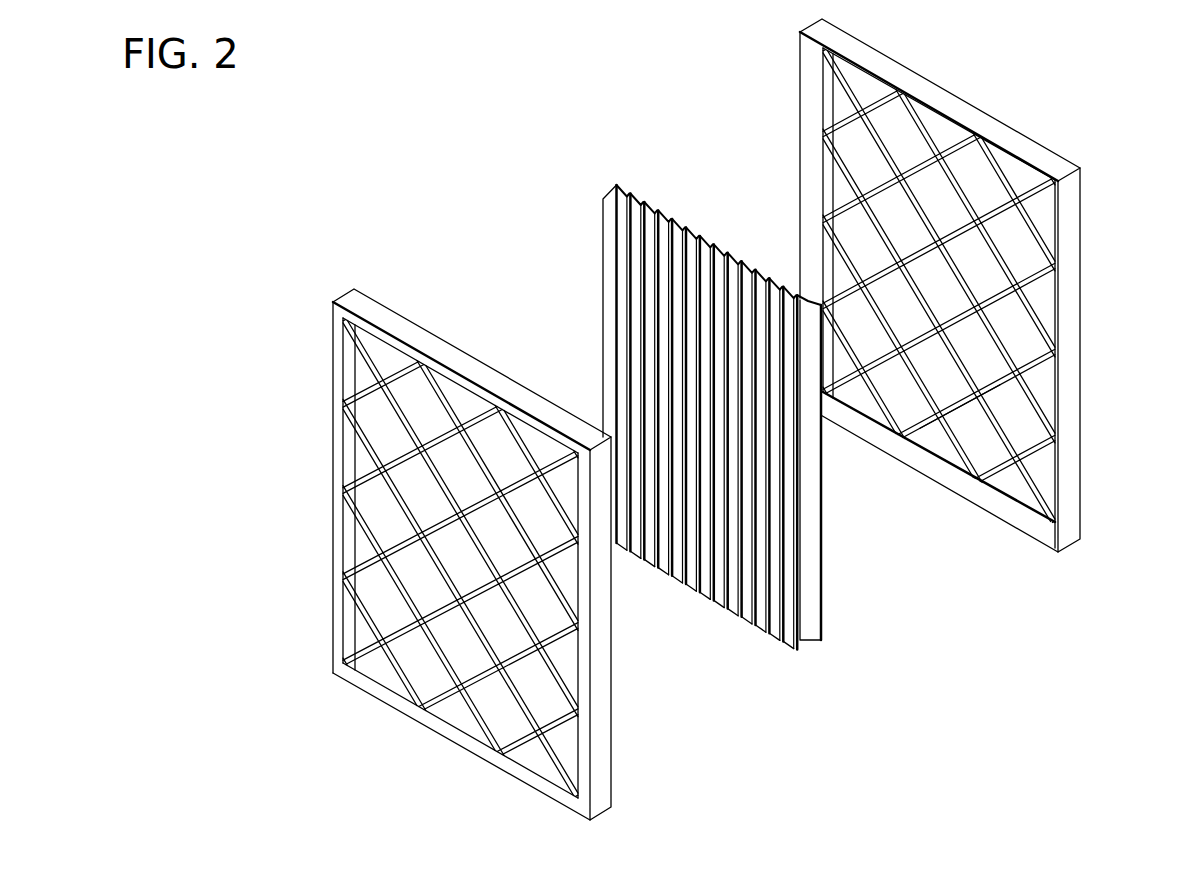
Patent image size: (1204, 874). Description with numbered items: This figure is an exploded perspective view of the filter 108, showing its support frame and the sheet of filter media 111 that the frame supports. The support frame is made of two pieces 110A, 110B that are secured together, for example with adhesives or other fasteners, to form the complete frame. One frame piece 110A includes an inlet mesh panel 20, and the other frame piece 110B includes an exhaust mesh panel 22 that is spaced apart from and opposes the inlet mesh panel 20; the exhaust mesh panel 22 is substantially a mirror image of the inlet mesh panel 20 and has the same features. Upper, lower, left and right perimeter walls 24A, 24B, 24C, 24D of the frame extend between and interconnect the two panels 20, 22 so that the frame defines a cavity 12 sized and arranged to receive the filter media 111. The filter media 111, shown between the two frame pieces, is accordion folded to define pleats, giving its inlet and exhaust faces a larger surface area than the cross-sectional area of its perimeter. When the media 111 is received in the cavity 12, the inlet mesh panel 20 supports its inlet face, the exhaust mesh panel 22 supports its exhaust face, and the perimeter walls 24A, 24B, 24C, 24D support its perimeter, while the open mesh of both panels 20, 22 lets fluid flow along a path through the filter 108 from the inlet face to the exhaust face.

The filter assembly 108 is at (426, 127).
The first filter frame 110A is at (1013, 338).
The second filter frame 110B is at (525, 575).
The pleated filter media 111 is at (832, 670).
The cavity 12 is at (996, 262).
The inlet mesh panel 20 is at (385, 597).
The exhaust mesh panel 22 is at (952, 428).
The upper perimeter wall 24A is at (457, 360).
The lower perimeter wall 24B is at (463, 727).
The left perimeter wall 24C is at (347, 443).
The right perimeter wall 24D is at (603, 674).